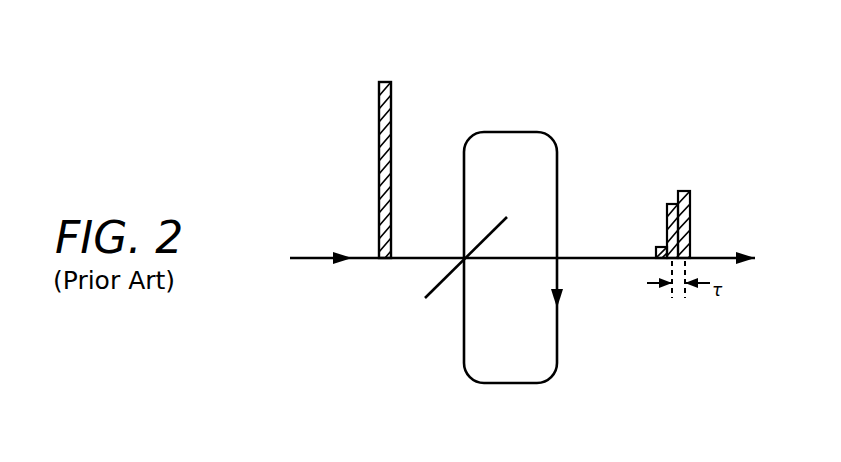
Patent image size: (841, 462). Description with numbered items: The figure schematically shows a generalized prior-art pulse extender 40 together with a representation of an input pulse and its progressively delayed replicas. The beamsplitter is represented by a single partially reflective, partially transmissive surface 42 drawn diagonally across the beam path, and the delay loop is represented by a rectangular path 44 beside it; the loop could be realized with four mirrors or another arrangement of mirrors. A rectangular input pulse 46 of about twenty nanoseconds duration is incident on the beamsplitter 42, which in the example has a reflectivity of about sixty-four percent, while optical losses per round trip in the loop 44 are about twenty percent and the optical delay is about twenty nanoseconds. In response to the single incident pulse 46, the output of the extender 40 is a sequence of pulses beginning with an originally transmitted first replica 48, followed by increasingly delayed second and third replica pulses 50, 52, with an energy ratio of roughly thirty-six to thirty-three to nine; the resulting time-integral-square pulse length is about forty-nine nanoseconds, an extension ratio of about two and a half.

The pulse extender 40 is at (380, 370).
The beamsplitter 42 is at (433, 290).
The delay loop 44 is at (558, 337).
The input pulse 46 is at (385, 113).
The first replica pulse 48 is at (683, 192).
The second replica pulse 50 is at (675, 205).
The third replica pulse 52 is at (662, 244).